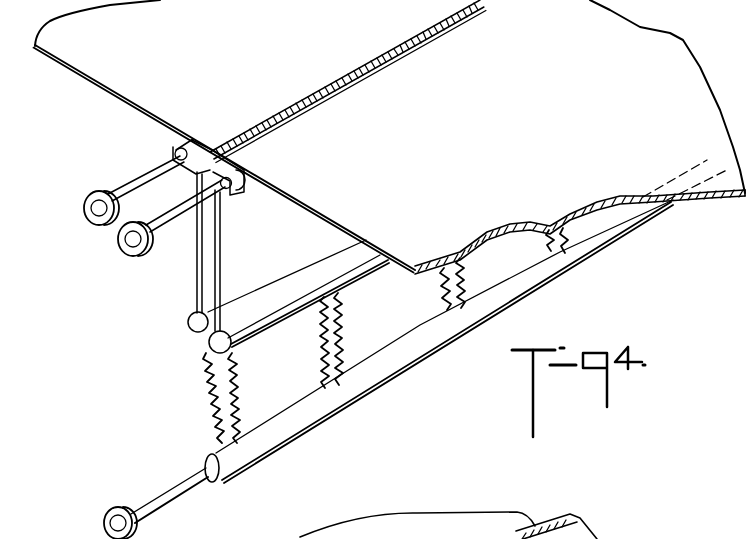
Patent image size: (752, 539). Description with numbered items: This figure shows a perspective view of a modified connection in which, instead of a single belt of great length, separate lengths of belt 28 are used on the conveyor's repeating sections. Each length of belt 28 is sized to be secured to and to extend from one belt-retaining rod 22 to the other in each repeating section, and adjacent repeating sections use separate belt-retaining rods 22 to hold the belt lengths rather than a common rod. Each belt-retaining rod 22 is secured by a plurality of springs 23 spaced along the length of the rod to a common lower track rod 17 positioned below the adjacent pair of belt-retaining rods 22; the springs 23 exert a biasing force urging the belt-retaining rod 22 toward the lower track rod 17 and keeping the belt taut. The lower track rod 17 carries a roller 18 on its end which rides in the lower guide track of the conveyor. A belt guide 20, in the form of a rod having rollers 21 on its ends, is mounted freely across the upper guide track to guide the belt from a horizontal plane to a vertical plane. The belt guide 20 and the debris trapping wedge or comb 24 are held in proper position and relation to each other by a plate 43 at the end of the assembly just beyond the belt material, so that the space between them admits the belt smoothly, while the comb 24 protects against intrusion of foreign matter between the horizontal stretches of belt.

The lower track rod 17 is at (369, 390).
The roller 18 is at (118, 507).
The belt guide 20 is at (172, 146).
The roller 21 is at (118, 250).
The belt-retaining rod 22 is at (212, 344).
The spring 23 is at (227, 402).
The debris trapping wedge or comb 24 is at (423, 38).
The belt 28 is at (141, 110).
The plate 43 is at (201, 152).